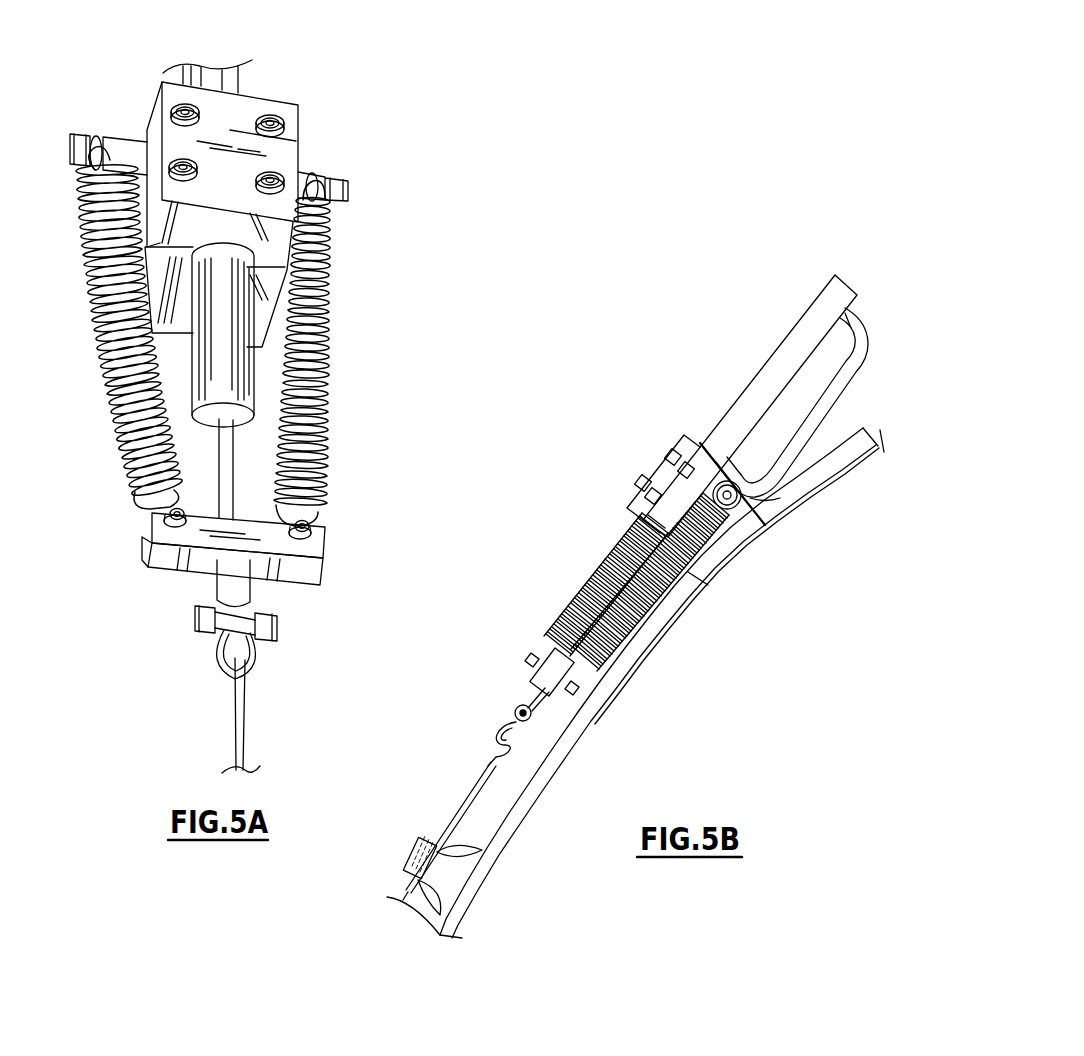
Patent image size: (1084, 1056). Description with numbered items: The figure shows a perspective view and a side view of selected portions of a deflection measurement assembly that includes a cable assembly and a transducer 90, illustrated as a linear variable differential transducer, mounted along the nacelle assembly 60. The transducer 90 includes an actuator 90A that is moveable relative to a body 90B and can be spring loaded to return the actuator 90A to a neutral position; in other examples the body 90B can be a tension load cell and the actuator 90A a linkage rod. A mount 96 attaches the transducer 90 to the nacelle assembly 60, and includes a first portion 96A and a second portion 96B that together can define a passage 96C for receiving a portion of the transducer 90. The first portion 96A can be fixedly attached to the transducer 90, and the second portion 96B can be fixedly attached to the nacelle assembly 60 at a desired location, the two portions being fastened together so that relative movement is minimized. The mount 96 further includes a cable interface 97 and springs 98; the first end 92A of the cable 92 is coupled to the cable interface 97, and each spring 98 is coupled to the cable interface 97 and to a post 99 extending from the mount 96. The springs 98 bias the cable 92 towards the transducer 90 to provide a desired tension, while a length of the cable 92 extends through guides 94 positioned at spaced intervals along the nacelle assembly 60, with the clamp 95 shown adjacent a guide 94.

In FIG. 5B, the nacelle assembly 60 is at (820, 486).
In FIG. 5A, the transducer 90 is at (238, 82).
In FIG. 5B, the transducer 90 is at (721, 420).
In FIG. 5A, the actuator 90A is at (234, 472).
In FIG. 5A, the body 90B is at (242, 366).
In FIG. 5B, the body 90B is at (758, 374).
In FIG. 5A, the cable 92 is at (245, 755).
In FIG. 5B, the cable 92 is at (448, 812).
In FIG. 5A, the first end 92A is at (248, 717).
In FIG. 5B, the first end 92A is at (480, 780).
In FIG. 5B, the guide 94 is at (408, 866).
In FIG. 5B, the strap 95 is at (440, 848).
In FIG. 5A, the mount 96 is at (300, 125).
In FIG. 5B, the mount 96 is at (636, 491).
In FIG. 5A, the first portion 96A is at (290, 147).
In FIG. 5B, the first portion 96A is at (640, 526).
In FIG. 5A, the second portion 96B is at (140, 213).
In FIG. 5B, the second portion 96B is at (748, 522).
In FIG. 5A, the passage 96C is at (203, 248).
In FIG. 5A, the cable interface 97 is at (328, 553).
In FIG. 5B, the cable interface 97 is at (545, 702).
In FIG. 5A, the spring 98 is at (112, 375).
In FIG. 5B, the spring 98 is at (567, 618).
In FIG. 5A, the post 99 is at (112, 150).
In FIG. 5B, the post 99 is at (730, 509).